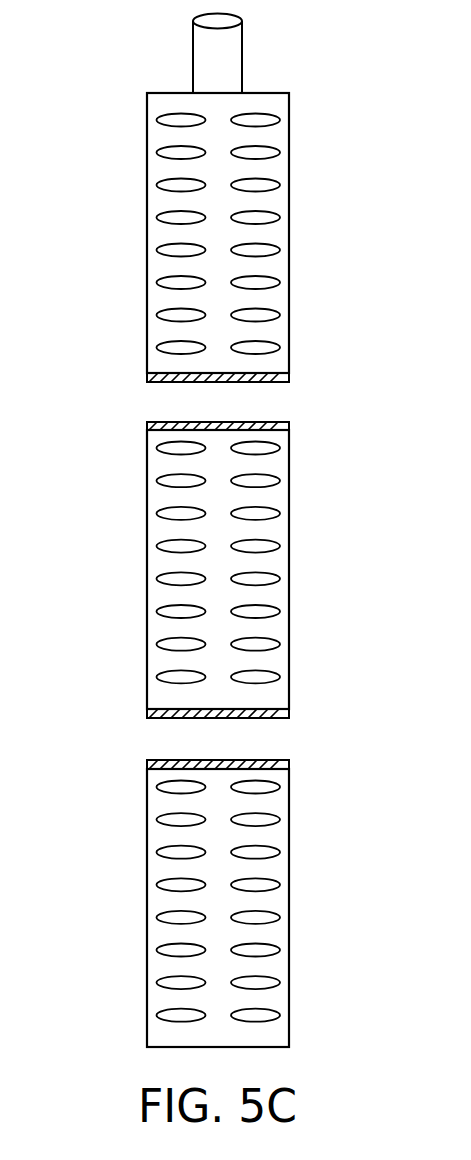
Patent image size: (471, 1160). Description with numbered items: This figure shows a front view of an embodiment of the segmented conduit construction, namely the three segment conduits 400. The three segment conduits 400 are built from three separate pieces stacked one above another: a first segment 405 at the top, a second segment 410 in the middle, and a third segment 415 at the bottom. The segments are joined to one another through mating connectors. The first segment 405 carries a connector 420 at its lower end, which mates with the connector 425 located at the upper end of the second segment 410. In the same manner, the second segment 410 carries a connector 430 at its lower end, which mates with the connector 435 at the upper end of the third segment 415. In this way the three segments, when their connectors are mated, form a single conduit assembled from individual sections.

The three segment conduits 400 is at (110, 44).
The first segment 405 is at (147, 237).
The second segment 410 is at (147, 568).
The third segment 415 is at (147, 871).
The connector 420 is at (147, 375).
The connector 425 is at (147, 424).
The connector 430 is at (147, 712).
The connector 435 is at (147, 762).